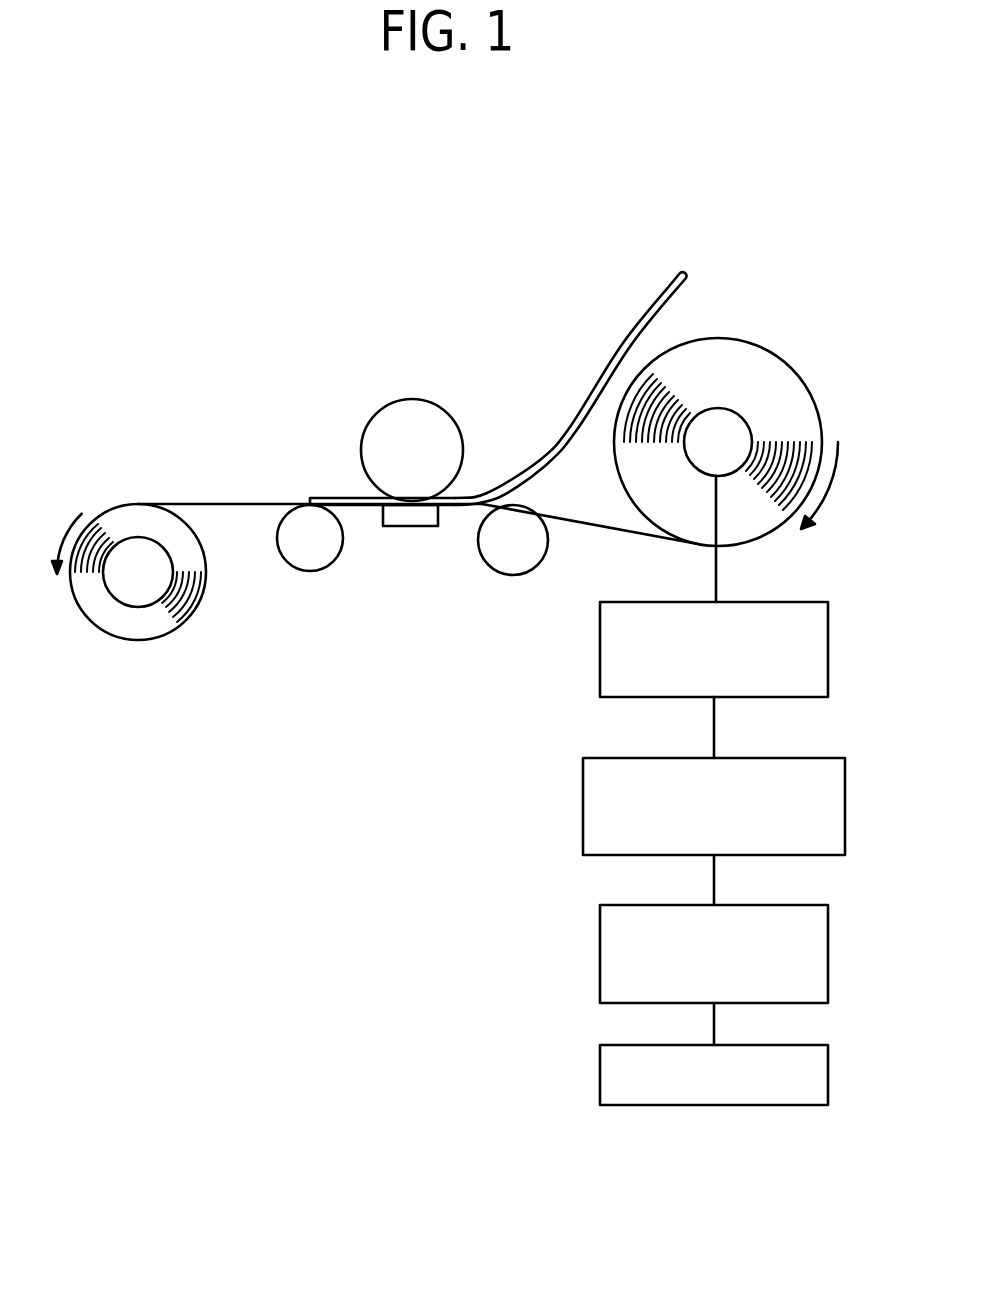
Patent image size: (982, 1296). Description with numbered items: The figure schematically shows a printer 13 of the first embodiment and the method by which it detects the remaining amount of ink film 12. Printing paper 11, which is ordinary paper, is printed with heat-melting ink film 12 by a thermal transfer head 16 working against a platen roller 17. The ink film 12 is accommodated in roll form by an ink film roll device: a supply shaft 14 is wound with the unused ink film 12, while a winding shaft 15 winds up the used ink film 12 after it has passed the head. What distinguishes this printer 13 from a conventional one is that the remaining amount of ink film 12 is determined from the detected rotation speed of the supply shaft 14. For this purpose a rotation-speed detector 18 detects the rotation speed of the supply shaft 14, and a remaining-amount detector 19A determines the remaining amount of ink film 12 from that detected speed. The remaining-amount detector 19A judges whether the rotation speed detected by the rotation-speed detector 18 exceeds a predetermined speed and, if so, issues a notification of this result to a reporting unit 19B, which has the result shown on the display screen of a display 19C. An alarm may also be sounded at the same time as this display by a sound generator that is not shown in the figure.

The printing paper 11 is at (620, 343).
The ink film 12 is at (220, 497).
The printer 13 is at (322, 383).
The supply shaft 14 is at (728, 432).
The winding shaft 15 is at (140, 582).
The thermal transfer head 16 is at (413, 527).
The platen roller 17 is at (417, 420).
The rotation-speed detector 18 is at (600, 662).
The remaining-amount detector 19A is at (600, 788).
The reporting unit 19B is at (600, 942).
The display 19C is at (600, 1078).